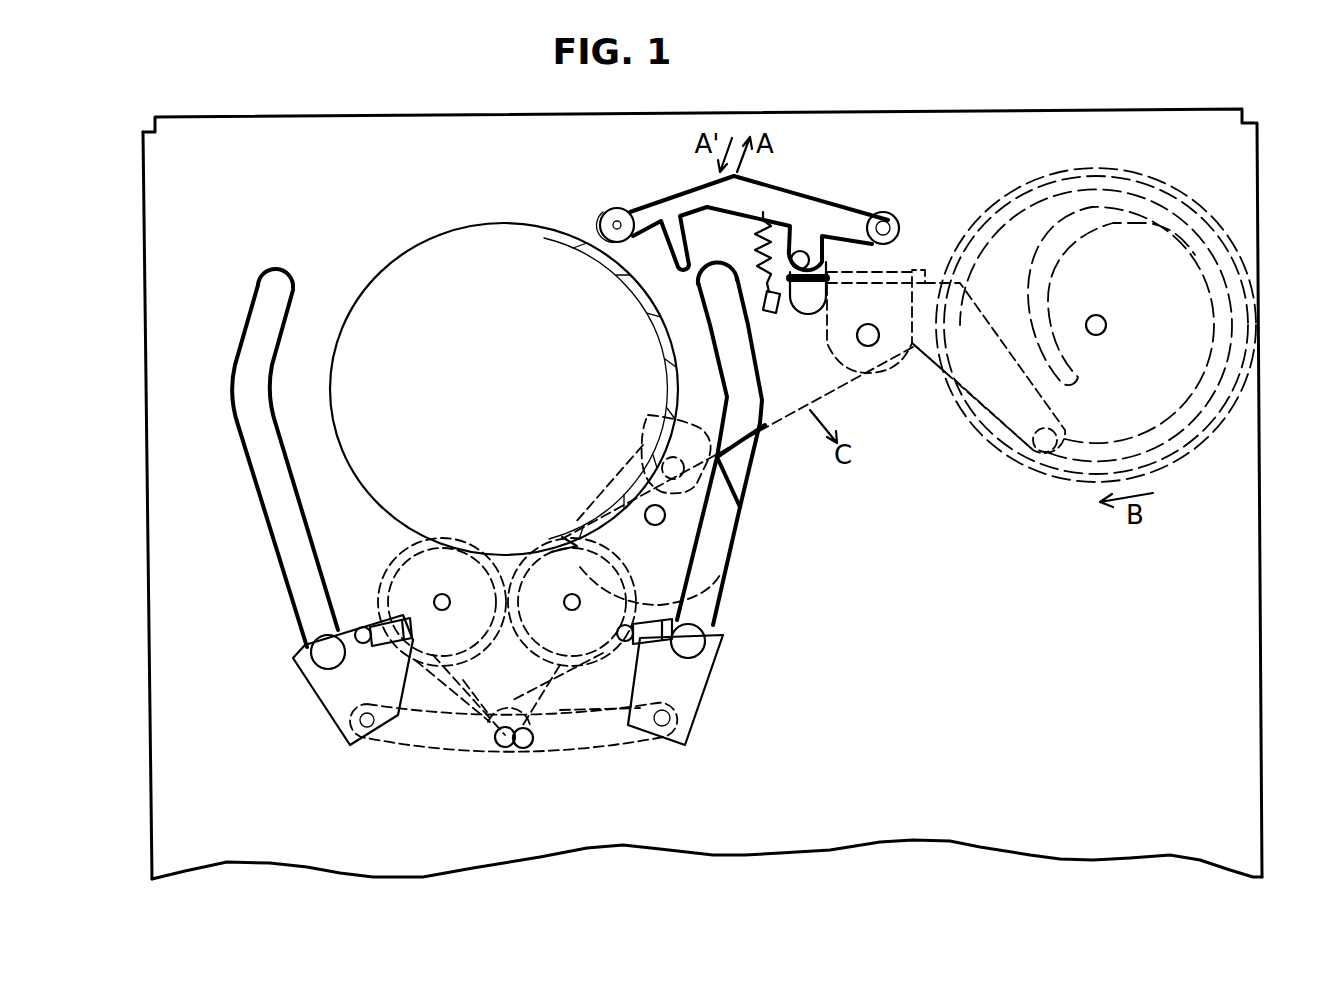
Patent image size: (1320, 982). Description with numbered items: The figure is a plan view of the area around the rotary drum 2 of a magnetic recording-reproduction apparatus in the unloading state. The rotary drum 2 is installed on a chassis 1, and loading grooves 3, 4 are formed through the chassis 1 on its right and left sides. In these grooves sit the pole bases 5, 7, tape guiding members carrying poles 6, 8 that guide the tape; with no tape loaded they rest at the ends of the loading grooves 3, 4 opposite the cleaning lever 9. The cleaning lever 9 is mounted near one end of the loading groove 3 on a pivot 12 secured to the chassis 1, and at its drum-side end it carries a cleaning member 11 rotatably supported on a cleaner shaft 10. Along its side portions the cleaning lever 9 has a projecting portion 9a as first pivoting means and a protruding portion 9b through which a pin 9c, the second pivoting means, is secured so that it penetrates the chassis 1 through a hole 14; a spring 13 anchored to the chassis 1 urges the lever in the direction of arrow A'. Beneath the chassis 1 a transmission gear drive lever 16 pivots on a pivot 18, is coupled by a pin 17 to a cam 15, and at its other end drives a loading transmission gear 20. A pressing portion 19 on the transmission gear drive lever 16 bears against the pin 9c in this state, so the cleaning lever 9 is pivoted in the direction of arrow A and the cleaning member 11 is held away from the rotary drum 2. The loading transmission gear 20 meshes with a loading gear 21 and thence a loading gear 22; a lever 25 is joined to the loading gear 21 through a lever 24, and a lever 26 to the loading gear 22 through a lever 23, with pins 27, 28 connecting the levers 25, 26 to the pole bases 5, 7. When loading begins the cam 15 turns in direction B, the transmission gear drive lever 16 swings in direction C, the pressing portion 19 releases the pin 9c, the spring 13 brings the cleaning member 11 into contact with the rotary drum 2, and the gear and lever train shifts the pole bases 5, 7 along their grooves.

The chassis 1 is at (470, 133).
The rotary drum 2 is at (445, 252).
The loading groove 3 is at (750, 462).
The loading groove 4 is at (277, 538).
The pole base 5 is at (690, 682).
The pole 6 is at (700, 613).
The pole base 7 is at (335, 688).
The pole 8 is at (375, 620).
The cleaning lever 9 is at (792, 228).
The projecting portion 9a is at (677, 234).
The protruding portion 9b is at (800, 250).
The pin 9c is at (818, 255).
The cleaner shaft 10 is at (618, 222).
The cleaning member 11 is at (608, 222).
The pivot 12 is at (897, 227).
The spring 13 is at (763, 264).
The hole 14 is at (797, 310).
The cam 15 is at (1200, 227).
The transmission gear drive lever 16 is at (934, 282).
The pin 17 is at (1045, 455).
The pivot 18 is at (869, 348).
The pressing portion 19 is at (840, 270).
The loading transmission gear 20 is at (683, 523).
The loading gear 21 is at (540, 565).
The loading gear 22 is at (408, 560).
The lever 23 is at (445, 710).
The lever 24 is at (547, 677).
The lever 25 is at (620, 738).
The lever 26 is at (470, 743).
The pin 27 is at (675, 722).
The pin 28 is at (367, 730).